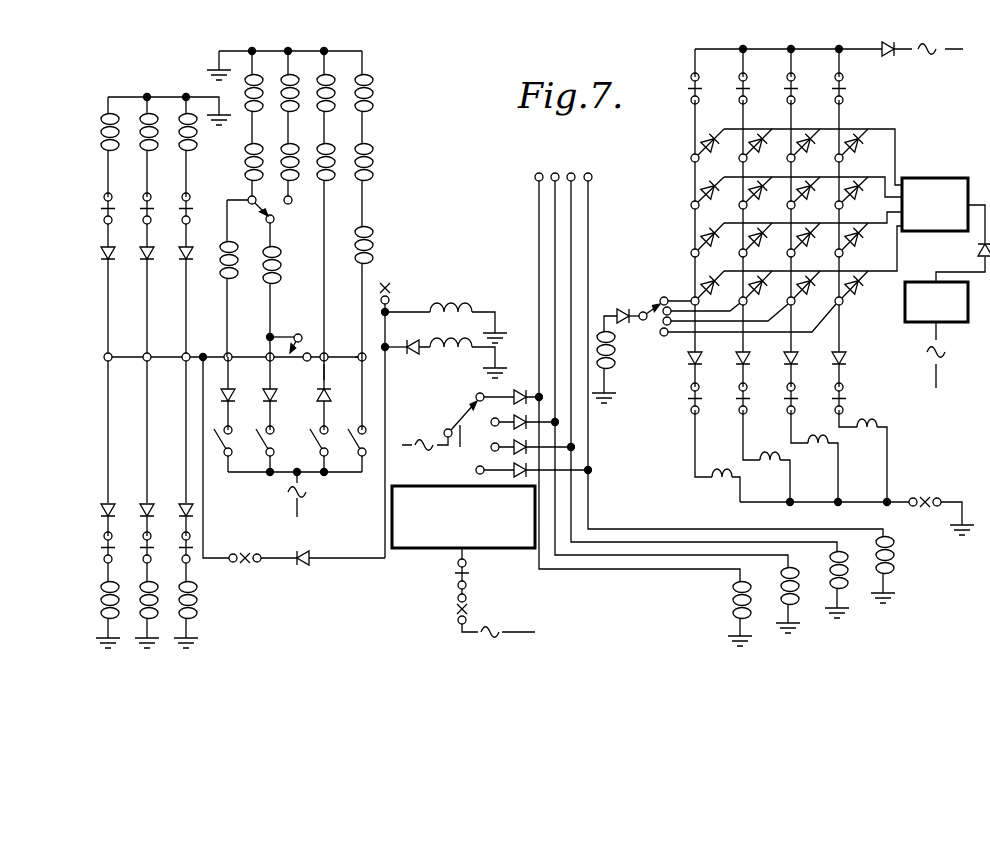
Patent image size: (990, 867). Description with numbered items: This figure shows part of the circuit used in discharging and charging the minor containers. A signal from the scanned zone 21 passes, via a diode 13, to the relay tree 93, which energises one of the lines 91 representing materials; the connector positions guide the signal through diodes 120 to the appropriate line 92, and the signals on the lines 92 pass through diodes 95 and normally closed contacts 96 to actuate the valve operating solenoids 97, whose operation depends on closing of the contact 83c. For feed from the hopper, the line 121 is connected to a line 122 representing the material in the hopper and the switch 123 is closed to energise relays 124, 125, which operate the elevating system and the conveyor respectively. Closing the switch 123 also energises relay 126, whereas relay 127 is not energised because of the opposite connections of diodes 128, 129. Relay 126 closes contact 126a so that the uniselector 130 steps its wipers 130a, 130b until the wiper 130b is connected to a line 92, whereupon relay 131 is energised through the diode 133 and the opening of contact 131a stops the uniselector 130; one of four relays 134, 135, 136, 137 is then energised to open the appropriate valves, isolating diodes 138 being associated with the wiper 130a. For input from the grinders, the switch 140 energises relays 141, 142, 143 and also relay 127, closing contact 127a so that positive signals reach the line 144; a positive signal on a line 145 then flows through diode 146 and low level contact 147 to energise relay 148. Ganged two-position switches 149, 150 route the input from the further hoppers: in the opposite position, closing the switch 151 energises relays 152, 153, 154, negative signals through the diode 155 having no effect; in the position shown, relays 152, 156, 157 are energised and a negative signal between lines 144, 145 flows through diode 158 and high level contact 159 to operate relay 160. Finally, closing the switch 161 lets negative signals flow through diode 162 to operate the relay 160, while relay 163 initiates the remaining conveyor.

The rectifier diode 13 is at (889, 57).
The zone 21 is at (936, 302).
The contact 83c is at (935, 490).
The lines 91 is at (806, 136).
The lines 92 is at (691, 167).
The relay tree 93 is at (922, 178).
The diodes 95 is at (701, 363).
The normally closed contacts 96 is at (700, 404).
The valve operating solenoids 97 is at (978, 205).
The diodes 120 is at (708, 139).
The line 121 is at (327, 372).
The line 122 is at (348, 355).
The switch 123 is at (303, 444).
The relay 124 is at (330, 148).
The relay 125 is at (333, 82).
The relay 126 is at (455, 302).
The contact 126a is at (468, 606).
The relay 127 is at (463, 359).
The contact 127a is at (244, 563).
The diode 128 is at (331, 397).
The diode 129 is at (409, 339).
The uniselector 130 is at (508, 542).
The wiper 130a is at (470, 455).
The wiper 130b is at (655, 298).
The relay 131 is at (612, 368).
The contact 131a is at (458, 578).
The diode 133 is at (624, 323).
The relay 134 is at (735, 598).
The relay 135 is at (797, 604).
The relay 136 is at (848, 590).
The relay 137 is at (895, 572).
The isolating diodes 138 is at (522, 393).
The switch 140 is at (357, 445).
The relay 141 is at (371, 245).
The relay 142 is at (371, 158).
The relay 143 is at (369, 92).
The line 144 is at (115, 355).
The line 145 is at (108, 462).
The diode 146 is at (101, 510).
The low level contact 147 is at (103, 550).
The relay 148 is at (104, 593).
The two-position switch 149 is at (288, 343).
The two-position switch 150 is at (250, 217).
The switch 151 is at (262, 442).
The relay 152 is at (286, 250).
The relay 153 is at (292, 181).
The relay 154 is at (277, 73).
The diode 155 is at (292, 384).
The relay 156 is at (250, 152).
The relay 157 is at (247, 92).
The diode 158 is at (101, 253).
The high level contact 159 is at (104, 197).
The relay 160 is at (110, 128).
The switch 161 is at (220, 436).
The diode 162 is at (246, 384).
The relay 163 is at (224, 265).